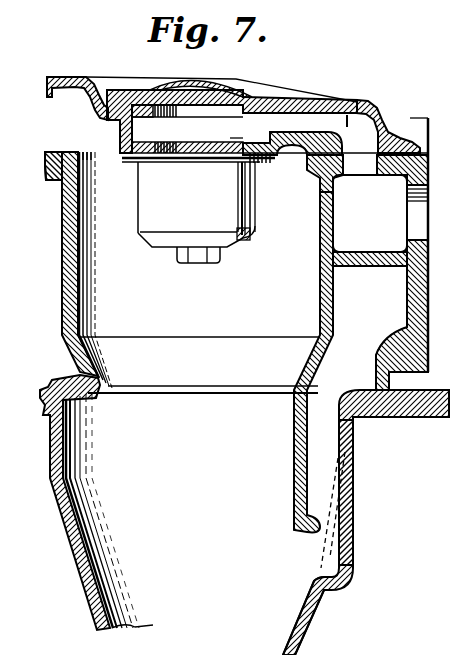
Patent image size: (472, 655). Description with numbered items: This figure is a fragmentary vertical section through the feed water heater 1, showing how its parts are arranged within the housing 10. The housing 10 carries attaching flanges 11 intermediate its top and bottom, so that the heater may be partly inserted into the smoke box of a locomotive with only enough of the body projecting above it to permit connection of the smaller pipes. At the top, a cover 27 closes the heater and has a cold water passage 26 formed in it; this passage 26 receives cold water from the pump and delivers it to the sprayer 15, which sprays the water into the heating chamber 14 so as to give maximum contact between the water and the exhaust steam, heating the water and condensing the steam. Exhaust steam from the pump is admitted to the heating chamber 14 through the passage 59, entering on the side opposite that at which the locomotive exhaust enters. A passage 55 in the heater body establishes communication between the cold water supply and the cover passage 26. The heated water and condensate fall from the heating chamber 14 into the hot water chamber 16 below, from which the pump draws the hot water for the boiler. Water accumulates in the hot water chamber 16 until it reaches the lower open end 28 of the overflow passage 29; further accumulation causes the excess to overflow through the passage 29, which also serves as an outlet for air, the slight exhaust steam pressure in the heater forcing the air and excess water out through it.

The feed water heater 1 is at (104, 75).
The cover 27 is at (300, 96).
The cold water passage 26 is at (357, 103).
The passage 59 is at (31, 171).
The heating chamber 14 is at (100, 252).
The sprayer 15 is at (168, 222).
The passage 55 is at (314, 235).
The overflow passage 29 is at (360, 467).
The attaching flanges 11 is at (391, 410).
The housing 10 is at (355, 512).
The lower open end 28 is at (306, 542).
The hot water chamber 16 is at (100, 505).